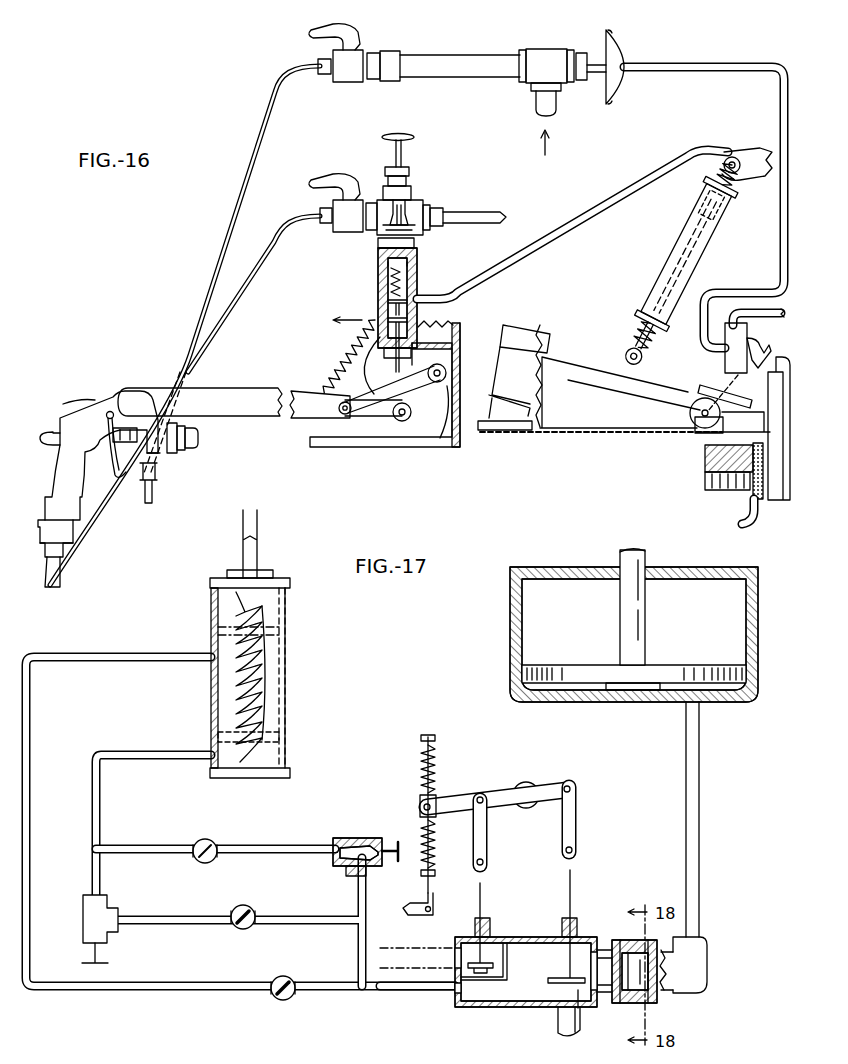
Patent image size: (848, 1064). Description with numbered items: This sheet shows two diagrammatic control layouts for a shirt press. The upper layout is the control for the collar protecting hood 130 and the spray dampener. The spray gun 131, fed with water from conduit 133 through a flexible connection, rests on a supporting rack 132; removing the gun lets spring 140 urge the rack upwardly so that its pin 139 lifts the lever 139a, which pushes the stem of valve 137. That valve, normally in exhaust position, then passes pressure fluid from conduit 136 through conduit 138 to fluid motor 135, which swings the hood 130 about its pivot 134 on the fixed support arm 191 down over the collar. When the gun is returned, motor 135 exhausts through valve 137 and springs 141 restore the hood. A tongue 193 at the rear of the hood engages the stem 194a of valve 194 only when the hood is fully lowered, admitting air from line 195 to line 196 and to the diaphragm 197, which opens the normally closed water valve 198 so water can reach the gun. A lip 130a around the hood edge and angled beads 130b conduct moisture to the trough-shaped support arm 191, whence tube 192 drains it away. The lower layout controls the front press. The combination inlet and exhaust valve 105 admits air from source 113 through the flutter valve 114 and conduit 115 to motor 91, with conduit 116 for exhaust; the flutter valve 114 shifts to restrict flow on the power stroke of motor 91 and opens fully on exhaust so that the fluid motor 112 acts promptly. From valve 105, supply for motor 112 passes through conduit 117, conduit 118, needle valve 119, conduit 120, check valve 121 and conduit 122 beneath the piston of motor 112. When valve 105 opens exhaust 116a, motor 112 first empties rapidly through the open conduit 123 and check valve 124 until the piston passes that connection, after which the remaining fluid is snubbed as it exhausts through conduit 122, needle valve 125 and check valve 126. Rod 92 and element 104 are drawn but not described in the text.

In FIG. 17, the motor 91 is at (678, 590).
In FIG. 17, the reservoir piston rod 92 is at (620, 556).
In FIG. 17, the spring-loaded actuating rod 104 is at (412, 918).
In FIG. 17, the combination inlet and exhaust valve 105 is at (516, 990).
In FIG. 17, the fluid motor 112 is at (283, 717).
In FIG. 17, the source 113 is at (433, 975).
In FIG. 17, the flutter valve 114 is at (628, 948).
In FIG. 17, the conduit 115 is at (686, 744).
In FIG. 17, the exhaust conduit 116 is at (562, 1016).
In FIG. 17, the exhaust 116a is at (577, 1004).
In FIG. 17, the conduit 117 is at (381, 990).
In FIG. 17, the conduit 118 is at (358, 893).
In FIG. 17, the needle valve 119 is at (367, 848).
In FIG. 17, the conduit 120 is at (264, 847).
In FIG. 17, the check valve 121 is at (200, 864).
In FIG. 17, the conduit 122 is at (160, 752).
In FIG. 17, the open conduit 123 is at (137, 653).
In FIG. 17, the check valve 124 is at (294, 974).
In FIG. 17, the needle valve 125 is at (87, 906).
In FIG. 17, the check valve 126 is at (244, 905).
In FIG. 16, the hood 130 is at (566, 435).
In FIG. 16, the lip 130a is at (512, 434).
In FIG. 16, the beads 130b is at (480, 420).
In FIG. 16, the spray gun 131 is at (72, 410).
In FIG. 16, the supporting rack 132 is at (147, 387).
In FIG. 16, the conduit 133 is at (480, 75).
In FIG. 16, the pivot 134 is at (708, 410).
In FIG. 16, the fluid motor 135 is at (634, 287).
In FIG. 16, the conduit 136 is at (483, 214).
In FIG. 16, the valve 137 is at (376, 285).
In FIG. 16, the conduit 138 is at (579, 216).
In FIG. 16, the pin 139 is at (345, 418).
In FIG. 16, the lever 139a is at (420, 428).
In FIG. 16, the spring 140 is at (330, 368).
In FIG. 16, the springs 141 is at (734, 178).
In FIG. 16, the fixed support arm 191 is at (705, 462).
In FIG. 16, the tube 192 is at (740, 511).
In FIG. 16, the tongue 193 is at (700, 428).
In FIG. 16, the valve 194 is at (725, 357).
In FIG. 16, the stem 194a is at (752, 360).
In FIG. 16, the line 195 is at (740, 311).
In FIG. 16, the line 196 is at (783, 237).
In FIG. 16, the diaphragm 197 is at (622, 60).
In FIG. 16, the water valve 198 is at (538, 62).